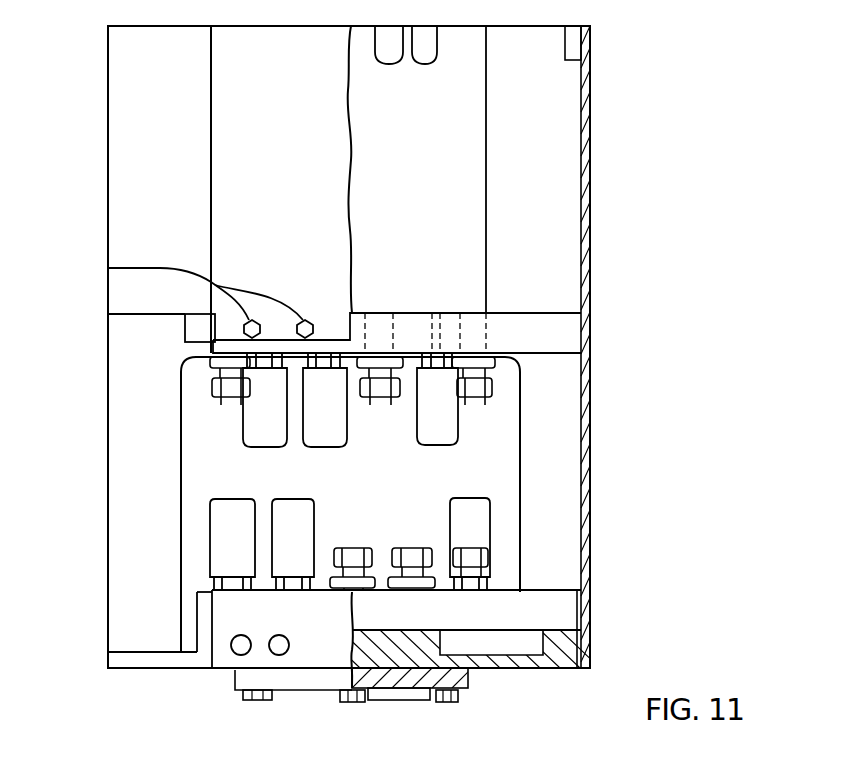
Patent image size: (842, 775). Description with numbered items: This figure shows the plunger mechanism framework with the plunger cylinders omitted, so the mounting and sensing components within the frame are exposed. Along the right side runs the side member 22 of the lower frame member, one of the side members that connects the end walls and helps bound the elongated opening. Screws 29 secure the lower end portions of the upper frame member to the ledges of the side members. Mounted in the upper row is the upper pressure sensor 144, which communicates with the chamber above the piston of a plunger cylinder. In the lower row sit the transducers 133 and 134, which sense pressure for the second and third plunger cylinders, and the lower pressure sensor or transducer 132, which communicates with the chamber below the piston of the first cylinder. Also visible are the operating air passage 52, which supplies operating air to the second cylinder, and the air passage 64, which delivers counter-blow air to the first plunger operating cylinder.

The side member 22 is at (556, 303).
The screws 29 is at (108, 268).
The upper pressure sensor 144 is at (442, 418).
The transducer 133 is at (287, 520).
The transducer 134 is at (225, 537).
The operating air passage 52 is at (353, 555).
The air passage 64 is at (415, 555).
The transducer 132 is at (476, 521).